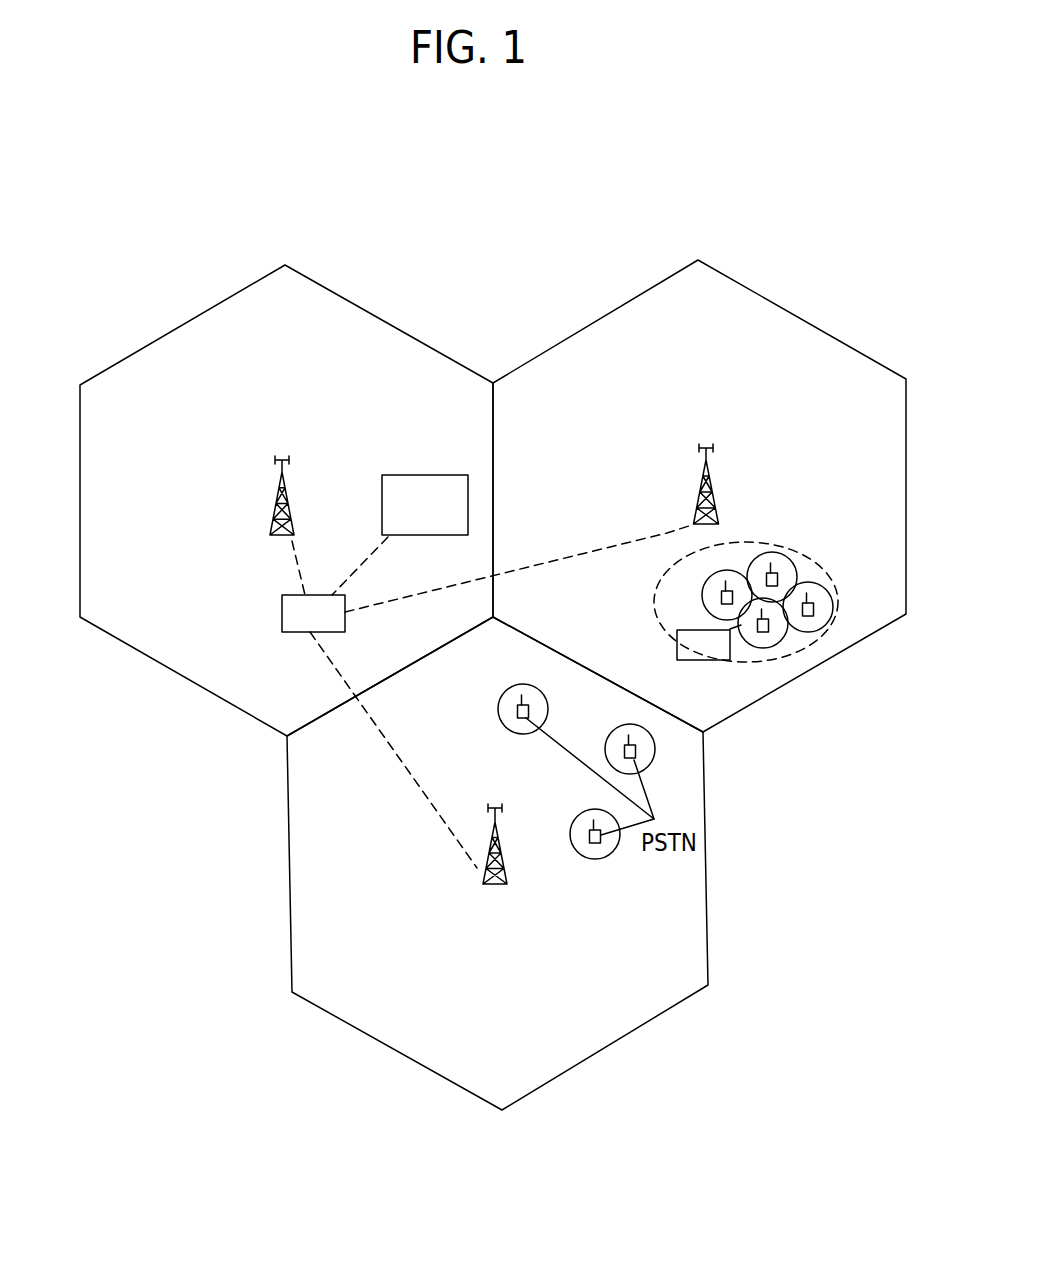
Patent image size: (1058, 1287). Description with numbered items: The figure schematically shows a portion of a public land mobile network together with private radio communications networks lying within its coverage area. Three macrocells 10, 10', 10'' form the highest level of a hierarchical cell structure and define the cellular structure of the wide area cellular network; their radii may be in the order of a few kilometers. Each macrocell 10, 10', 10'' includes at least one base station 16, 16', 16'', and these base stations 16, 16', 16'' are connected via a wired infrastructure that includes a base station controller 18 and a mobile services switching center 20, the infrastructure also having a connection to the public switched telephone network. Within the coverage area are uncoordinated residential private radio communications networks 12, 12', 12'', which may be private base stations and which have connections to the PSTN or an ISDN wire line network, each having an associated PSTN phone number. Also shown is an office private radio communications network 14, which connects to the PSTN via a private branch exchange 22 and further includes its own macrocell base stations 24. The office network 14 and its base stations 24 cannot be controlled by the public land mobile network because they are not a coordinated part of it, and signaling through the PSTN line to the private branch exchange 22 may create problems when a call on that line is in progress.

The macrocell 10 is at (701, 494).
The macrocell 10' is at (286, 481).
The macrocell 10'' is at (568, 863).
The residential private radio communications network 12 is at (494, 700).
The residential private radio communications network 12' is at (616, 730).
The residential private radio communications network 12'' is at (618, 845).
The office private radio communications network 14 is at (755, 684).
The base station 16 is at (741, 474).
The base station 16' is at (313, 464).
The base station 16'' is at (464, 879).
The base station controller 18 is at (282, 623).
The mobile services switching center 20 is at (420, 475).
The private branch exchange 22 is at (677, 630).
The macrocell base stations 24 is at (786, 601).